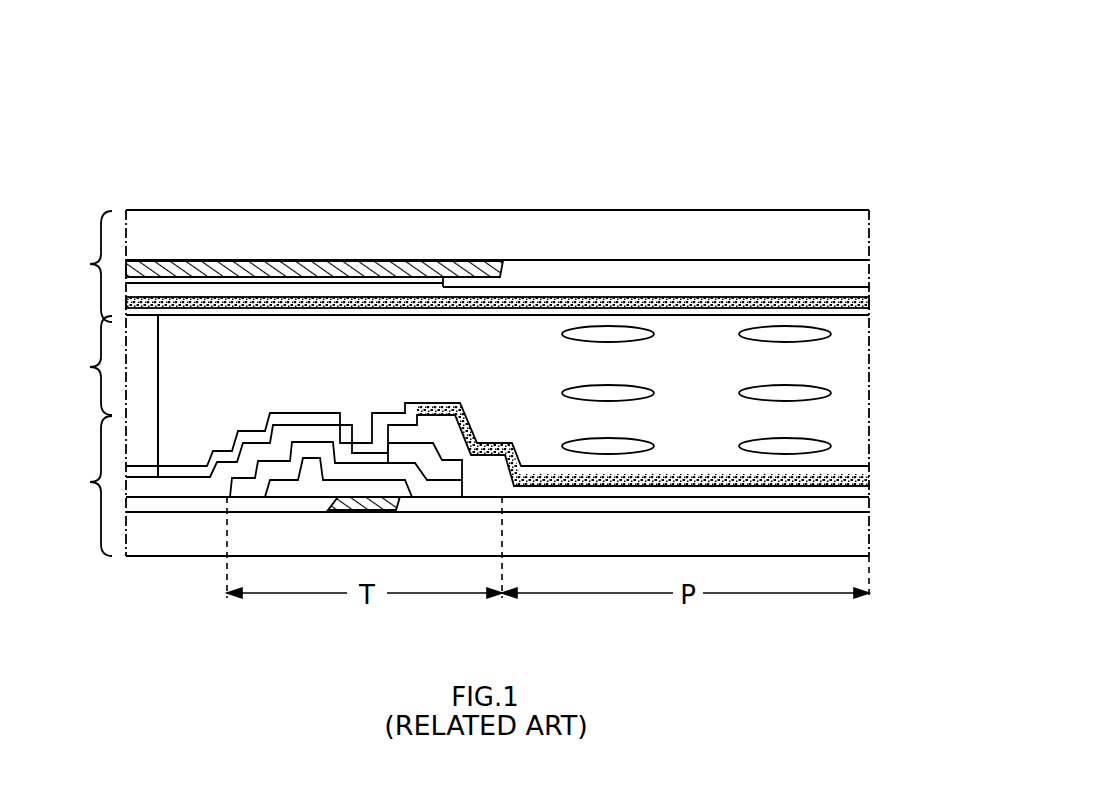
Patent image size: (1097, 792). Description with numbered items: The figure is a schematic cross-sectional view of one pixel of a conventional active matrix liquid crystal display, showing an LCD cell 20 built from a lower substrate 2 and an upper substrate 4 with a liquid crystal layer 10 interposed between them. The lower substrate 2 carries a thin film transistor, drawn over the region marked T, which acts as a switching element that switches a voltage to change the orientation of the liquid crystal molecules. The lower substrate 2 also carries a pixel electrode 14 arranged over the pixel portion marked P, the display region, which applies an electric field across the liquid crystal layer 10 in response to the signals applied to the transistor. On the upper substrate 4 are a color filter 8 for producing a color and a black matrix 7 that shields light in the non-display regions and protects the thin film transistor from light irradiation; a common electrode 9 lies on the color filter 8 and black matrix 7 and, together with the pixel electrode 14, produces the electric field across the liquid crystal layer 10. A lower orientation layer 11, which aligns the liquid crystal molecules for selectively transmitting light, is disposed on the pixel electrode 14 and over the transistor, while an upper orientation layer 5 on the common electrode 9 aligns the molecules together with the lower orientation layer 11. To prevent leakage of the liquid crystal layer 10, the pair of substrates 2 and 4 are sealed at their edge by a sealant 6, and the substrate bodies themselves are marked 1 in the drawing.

The substrate 1 is at (564, 246).
The lower substrate 2 is at (466, 479).
The upper substrate 4 is at (90, 266).
The upper orientation layer 5 is at (855, 312).
The sealant 6 is at (147, 350).
The black matrix 7 is at (461, 260).
The color filter 8 is at (630, 275).
The common electrode 9 is at (857, 302).
The liquid crystal layer 10 is at (440, 385).
The lower orientation layer 11 is at (860, 467).
The pixel electrode 14 is at (860, 478).
The LCD cell 20 is at (772, 128).